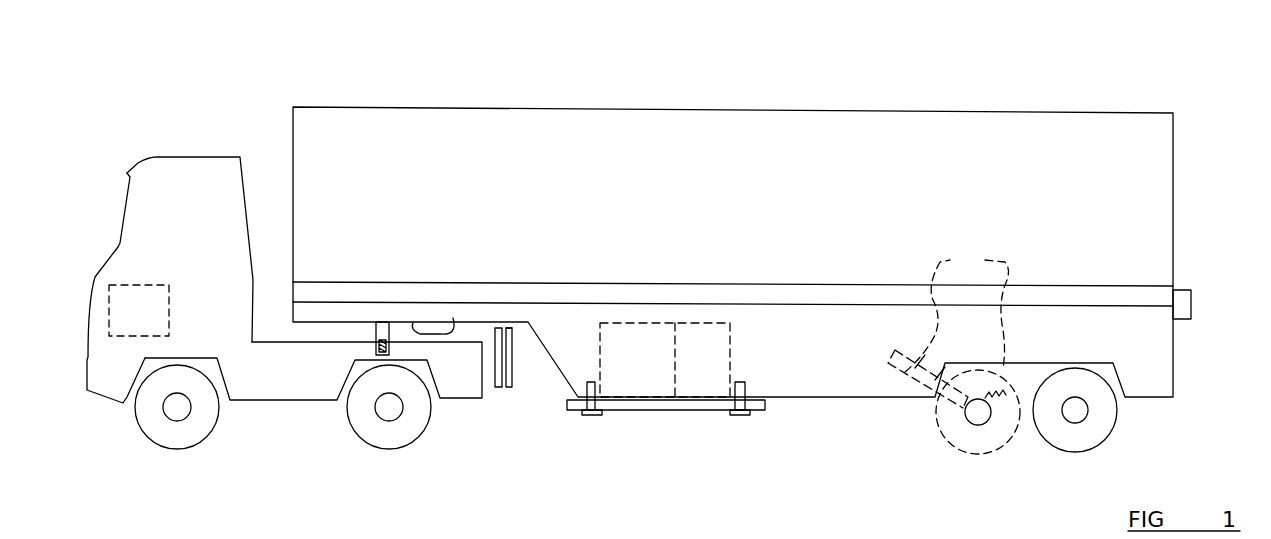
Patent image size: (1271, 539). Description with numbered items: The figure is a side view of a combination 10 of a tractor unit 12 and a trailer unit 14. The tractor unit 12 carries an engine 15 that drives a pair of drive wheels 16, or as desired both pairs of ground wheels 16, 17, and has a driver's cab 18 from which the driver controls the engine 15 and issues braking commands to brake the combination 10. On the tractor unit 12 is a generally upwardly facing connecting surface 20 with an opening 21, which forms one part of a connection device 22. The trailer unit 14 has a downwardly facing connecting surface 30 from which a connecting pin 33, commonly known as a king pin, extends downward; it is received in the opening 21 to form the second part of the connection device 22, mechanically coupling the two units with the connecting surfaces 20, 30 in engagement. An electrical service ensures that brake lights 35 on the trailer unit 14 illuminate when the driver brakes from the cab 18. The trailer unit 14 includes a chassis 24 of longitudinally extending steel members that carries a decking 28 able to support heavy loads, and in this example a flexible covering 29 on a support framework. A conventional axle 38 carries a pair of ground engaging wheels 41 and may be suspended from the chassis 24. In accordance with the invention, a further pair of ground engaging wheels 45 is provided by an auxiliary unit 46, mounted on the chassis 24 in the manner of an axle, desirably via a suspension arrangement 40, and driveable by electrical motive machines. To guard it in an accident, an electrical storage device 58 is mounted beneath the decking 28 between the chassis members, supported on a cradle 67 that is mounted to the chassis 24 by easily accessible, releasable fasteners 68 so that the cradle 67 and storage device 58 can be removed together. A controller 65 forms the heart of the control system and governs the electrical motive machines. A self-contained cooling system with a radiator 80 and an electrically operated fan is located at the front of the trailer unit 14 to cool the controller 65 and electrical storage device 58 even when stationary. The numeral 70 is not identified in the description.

The combination 10 is at (458, 104).
The tractor unit 12 is at (199, 156).
The trailer unit 14 is at (849, 107).
The engine 15 is at (132, 283).
The drive wheels 16 is at (378, 437).
The ground wheels 17 is at (190, 432).
The driver's cab 18 is at (170, 280).
The connecting surface 20 is at (332, 342).
The opening 21 is at (393, 352).
The connection device 22 is at (282, 301).
The chassis 24 is at (569, 342).
The decking 28 is at (1120, 297).
The flexible covering 29 is at (940, 185).
The connecting surface 30 is at (453, 318).
The connecting pin 33 is at (375, 320).
The brake lights 35 is at (1190, 302).
The axle 38 is at (1075, 412).
The suspension arrangement 40 is at (957, 310).
The ground engaging wheels 41 is at (1103, 413).
The further ground engaging wheels 45 is at (970, 453).
The auxiliary unit 46 is at (958, 425).
The electrical storage device 58 is at (632, 350).
The controller 65 is at (698, 347).
The cradle 67 is at (682, 410).
The fasteners 68 is at (590, 415).
The ground 70 is at (416, 534).
The radiator 80 is at (500, 392).